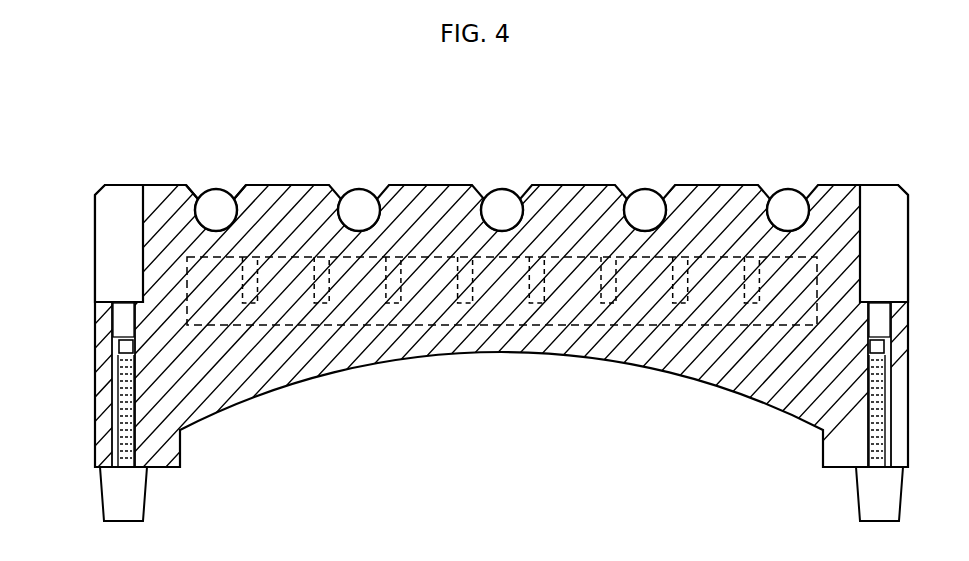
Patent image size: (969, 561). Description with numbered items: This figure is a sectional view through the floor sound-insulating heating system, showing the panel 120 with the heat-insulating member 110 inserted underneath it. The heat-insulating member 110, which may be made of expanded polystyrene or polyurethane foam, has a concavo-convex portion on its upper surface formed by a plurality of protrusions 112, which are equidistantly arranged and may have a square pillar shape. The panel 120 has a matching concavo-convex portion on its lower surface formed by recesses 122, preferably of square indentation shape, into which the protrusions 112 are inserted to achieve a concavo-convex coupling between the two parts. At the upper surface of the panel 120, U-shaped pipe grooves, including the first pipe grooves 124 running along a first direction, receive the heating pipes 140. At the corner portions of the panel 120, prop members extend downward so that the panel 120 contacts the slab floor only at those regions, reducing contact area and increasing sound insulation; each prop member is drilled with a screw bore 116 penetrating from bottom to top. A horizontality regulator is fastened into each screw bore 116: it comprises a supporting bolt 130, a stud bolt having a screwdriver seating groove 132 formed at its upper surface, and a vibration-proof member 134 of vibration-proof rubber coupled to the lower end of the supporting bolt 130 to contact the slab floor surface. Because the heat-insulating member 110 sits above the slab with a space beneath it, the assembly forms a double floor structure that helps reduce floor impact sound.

The heat-insulating member 110 is at (414, 330).
The protrusions 112 is at (212, 258).
The screw bore 116 is at (117, 320).
The panel 120 is at (576, 170).
The recesses 122 is at (205, 283).
The first pipe grooves 124 is at (205, 190).
The supporting bolt 130 is at (120, 397).
The screwdriver seating groove 132 is at (115, 345).
The vibration-proof member 134 is at (117, 492).
The heating pipes 140 is at (218, 189).